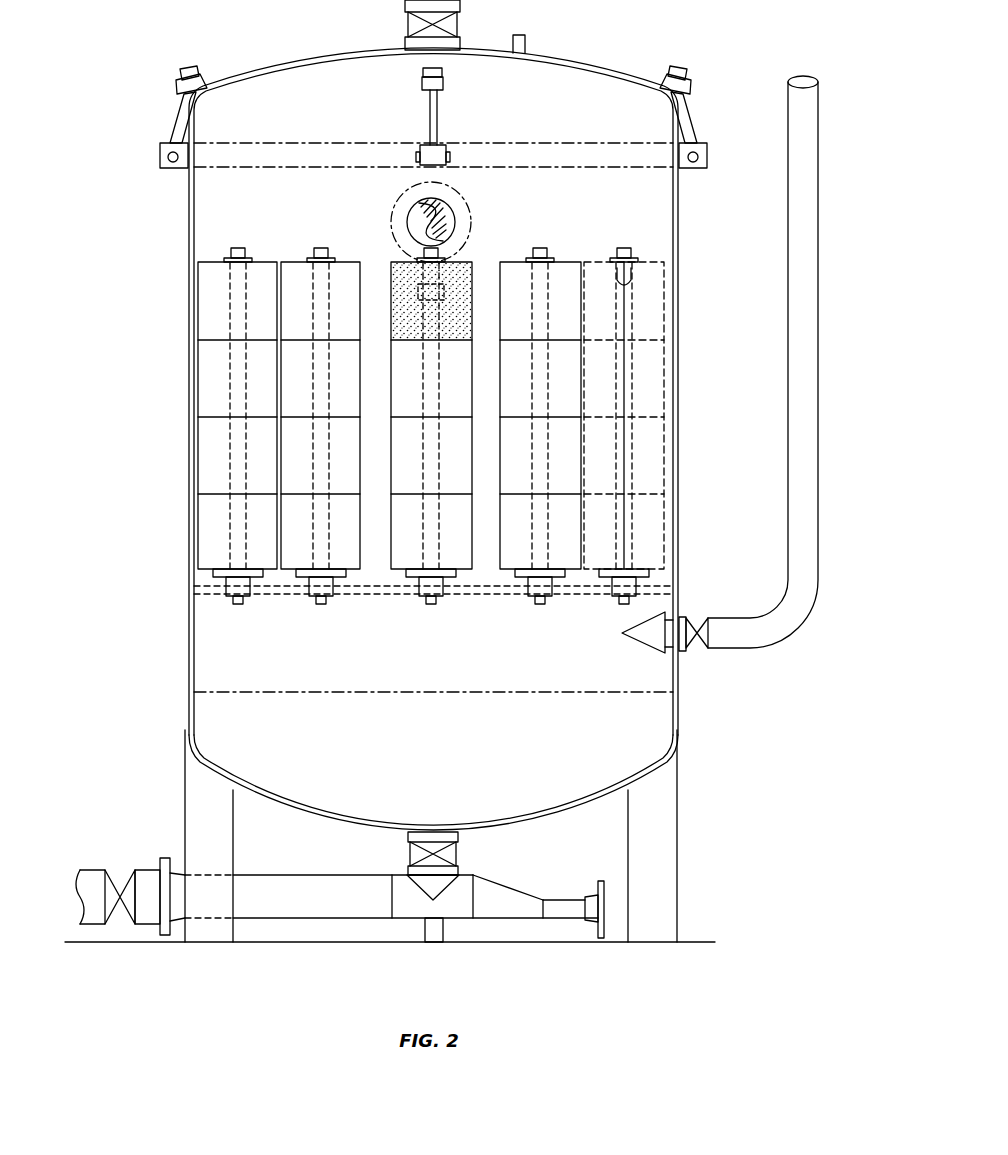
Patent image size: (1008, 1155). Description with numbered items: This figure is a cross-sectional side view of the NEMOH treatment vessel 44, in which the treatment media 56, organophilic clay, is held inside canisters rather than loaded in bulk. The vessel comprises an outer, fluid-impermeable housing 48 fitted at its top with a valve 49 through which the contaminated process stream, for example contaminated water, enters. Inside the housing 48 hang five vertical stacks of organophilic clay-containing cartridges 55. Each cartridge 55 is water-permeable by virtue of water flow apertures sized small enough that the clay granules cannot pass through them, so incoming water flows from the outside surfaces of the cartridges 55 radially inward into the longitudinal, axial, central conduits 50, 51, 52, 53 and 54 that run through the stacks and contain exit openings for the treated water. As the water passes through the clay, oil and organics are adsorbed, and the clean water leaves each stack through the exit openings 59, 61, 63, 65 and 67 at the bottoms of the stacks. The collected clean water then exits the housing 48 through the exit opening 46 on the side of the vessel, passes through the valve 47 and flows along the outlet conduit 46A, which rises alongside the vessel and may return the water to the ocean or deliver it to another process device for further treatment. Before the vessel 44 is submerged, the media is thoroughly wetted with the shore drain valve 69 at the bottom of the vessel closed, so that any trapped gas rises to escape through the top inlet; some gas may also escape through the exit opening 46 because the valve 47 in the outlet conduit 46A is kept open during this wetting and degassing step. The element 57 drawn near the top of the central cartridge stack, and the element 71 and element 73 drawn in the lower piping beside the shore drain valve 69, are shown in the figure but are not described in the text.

The treatment vessel 44 is at (126, 92).
The exit opening 46 is at (682, 652).
The outlet conduit 46A is at (808, 321).
The valve 47 is at (697, 625).
The housing 48 is at (187, 207).
The valve 49 is at (462, 30).
The central conduit 50 is at (633, 325).
The central conduit 51 is at (548, 355).
The central conduit 52 is at (440, 397).
The central conduit 53 is at (315, 476).
The central conduit 54 is at (233, 524).
The cartridge 55 is at (233, 303).
The treatment media 56 is at (408, 268).
The core 57 is at (438, 277).
The exit opening 59 is at (618, 607).
The exit opening 61 is at (541, 607).
The exit opening 63 is at (432, 607).
The exit opening 65 is at (322, 607).
The exit opening 67 is at (241, 607).
The shore drain valve 69 is at (450, 853).
The outlet valve 71 is at (118, 871).
The outlet pipe 73 is at (803, 78).